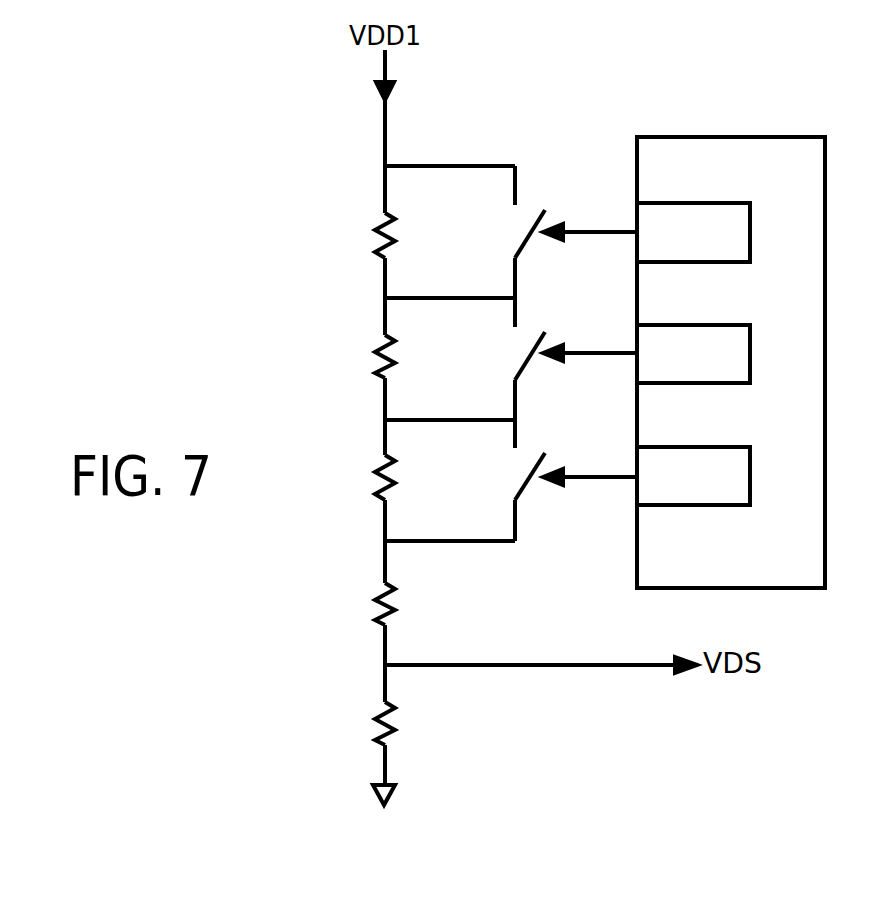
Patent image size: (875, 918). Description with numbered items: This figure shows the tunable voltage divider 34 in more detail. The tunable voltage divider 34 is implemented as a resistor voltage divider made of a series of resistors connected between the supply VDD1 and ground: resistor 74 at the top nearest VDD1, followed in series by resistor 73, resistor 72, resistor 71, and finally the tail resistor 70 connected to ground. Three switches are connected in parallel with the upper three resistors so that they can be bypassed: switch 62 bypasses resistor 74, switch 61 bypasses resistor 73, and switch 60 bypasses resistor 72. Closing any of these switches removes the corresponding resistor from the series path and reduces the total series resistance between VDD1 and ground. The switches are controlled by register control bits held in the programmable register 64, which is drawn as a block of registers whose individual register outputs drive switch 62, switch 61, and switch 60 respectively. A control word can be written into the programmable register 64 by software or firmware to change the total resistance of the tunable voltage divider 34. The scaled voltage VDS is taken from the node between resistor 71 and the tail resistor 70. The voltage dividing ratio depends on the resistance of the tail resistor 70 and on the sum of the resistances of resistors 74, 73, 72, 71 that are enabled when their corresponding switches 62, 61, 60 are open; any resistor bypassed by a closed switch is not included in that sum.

The tunable voltage divider 34 is at (220, 742).
The switch 60 is at (528, 480).
The switch 61 is at (528, 359).
The switch 62 is at (528, 237).
The programmable register 64 is at (744, 556).
The tail resistor 70 is at (378, 741).
The resistor 71 is at (378, 619).
The resistor 72 is at (378, 496).
The resistor 73 is at (378, 374).
The resistor 74 is at (378, 252).